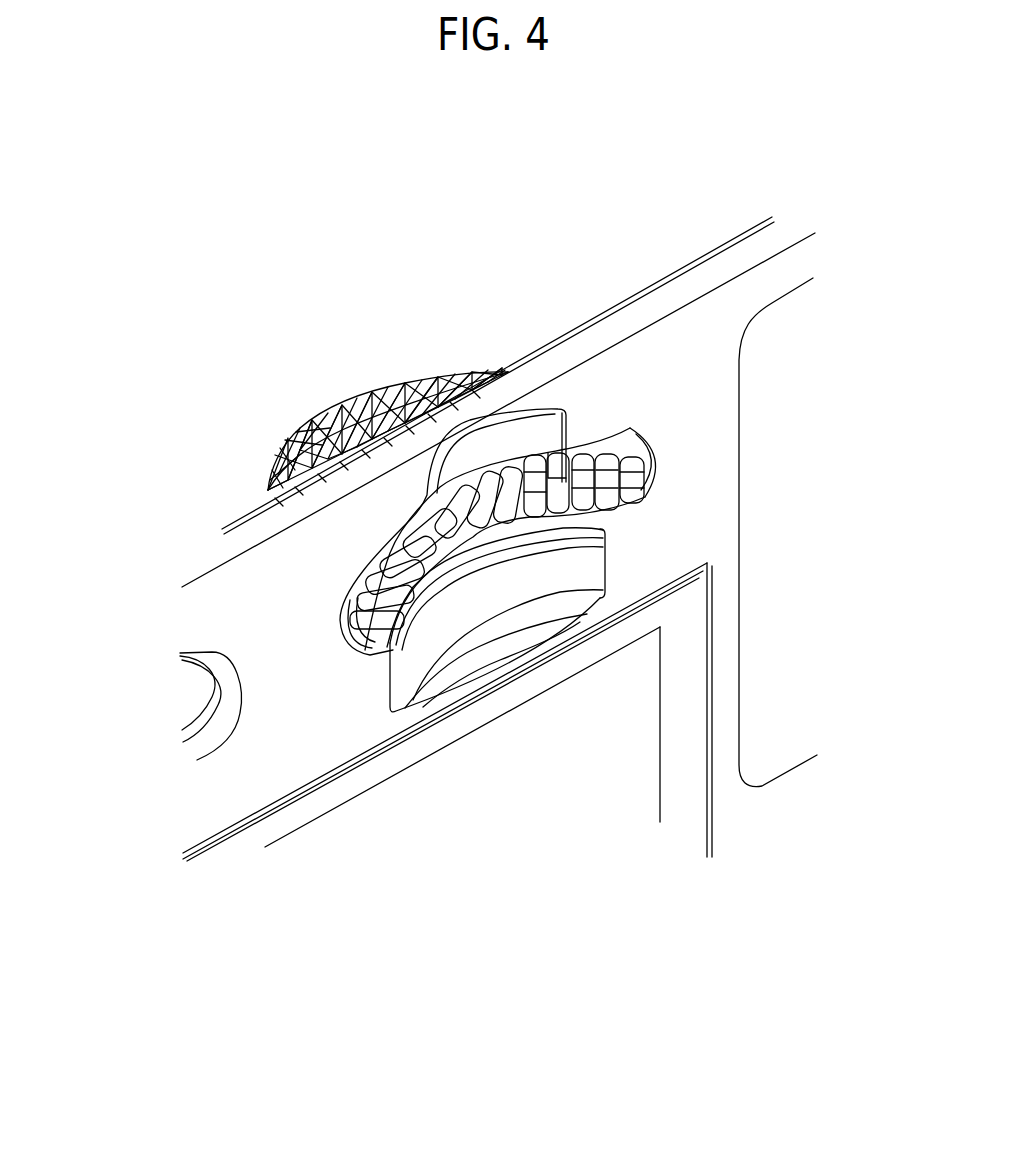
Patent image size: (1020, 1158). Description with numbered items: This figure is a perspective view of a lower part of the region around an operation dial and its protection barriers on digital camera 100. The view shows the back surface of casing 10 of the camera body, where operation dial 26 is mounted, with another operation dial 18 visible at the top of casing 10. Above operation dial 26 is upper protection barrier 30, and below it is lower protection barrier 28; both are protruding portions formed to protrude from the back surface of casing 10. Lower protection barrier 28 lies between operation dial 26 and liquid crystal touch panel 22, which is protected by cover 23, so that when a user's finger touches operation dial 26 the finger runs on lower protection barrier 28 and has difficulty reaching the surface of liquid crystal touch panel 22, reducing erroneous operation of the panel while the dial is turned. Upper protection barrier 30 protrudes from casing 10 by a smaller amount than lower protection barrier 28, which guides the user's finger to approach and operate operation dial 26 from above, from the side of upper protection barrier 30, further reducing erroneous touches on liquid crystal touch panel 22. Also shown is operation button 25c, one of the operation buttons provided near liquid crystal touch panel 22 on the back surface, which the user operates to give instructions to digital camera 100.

The digital camera 100 is at (235, 229).
The casing 10 is at (237, 597).
The operation dial 18 is at (362, 393).
The upper protection barrier 30 is at (517, 440).
The operation dial 26 is at (548, 465).
The lower protection barrier 28 is at (578, 565).
The cover 23 is at (707, 632).
The liquid crystal touch panel 22 is at (660, 727).
The operation button 25c is at (223, 705).